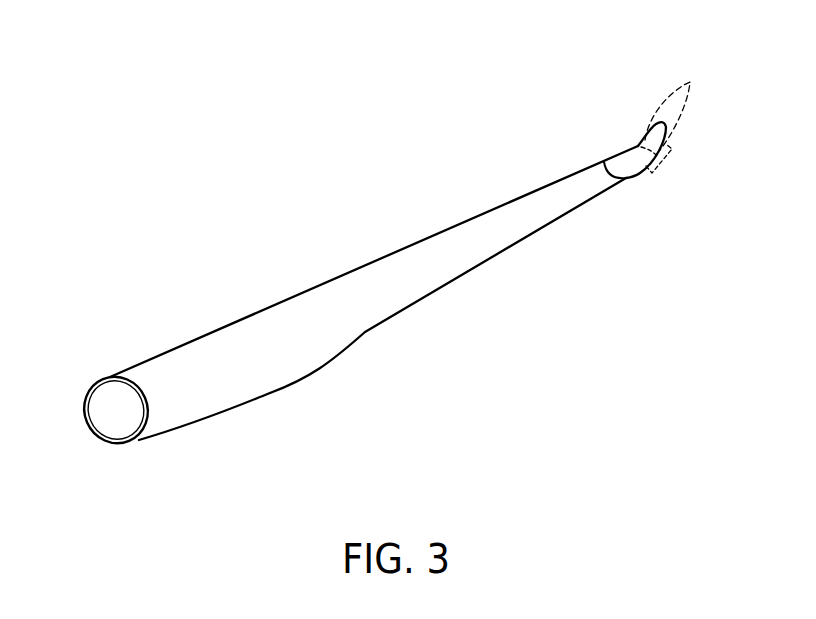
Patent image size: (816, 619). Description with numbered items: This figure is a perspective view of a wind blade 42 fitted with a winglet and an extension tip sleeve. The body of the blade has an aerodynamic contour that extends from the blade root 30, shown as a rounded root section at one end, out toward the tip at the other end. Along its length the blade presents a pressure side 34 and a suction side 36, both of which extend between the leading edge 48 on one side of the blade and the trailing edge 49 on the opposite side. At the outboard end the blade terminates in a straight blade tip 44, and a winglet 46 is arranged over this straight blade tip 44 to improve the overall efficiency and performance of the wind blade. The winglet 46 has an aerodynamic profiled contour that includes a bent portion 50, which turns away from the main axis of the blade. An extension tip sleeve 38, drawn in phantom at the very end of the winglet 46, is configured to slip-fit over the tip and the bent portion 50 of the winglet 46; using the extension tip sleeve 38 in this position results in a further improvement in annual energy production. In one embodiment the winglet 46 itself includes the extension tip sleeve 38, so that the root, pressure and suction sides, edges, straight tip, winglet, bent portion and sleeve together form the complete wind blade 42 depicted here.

The wind blade 42 is at (392, 271).
The blade root 30 is at (150, 395).
The pressure side 34 is at (374, 317).
The leading edge 48 is at (160, 355).
The trailing edge 49 is at (327, 368).
The suction side 36 is at (264, 428).
The straight blade tip 44 is at (603, 193).
The winglet 46 is at (628, 157).
The extension tip sleeve 38 is at (682, 110).
The bent portion 50 is at (670, 166).